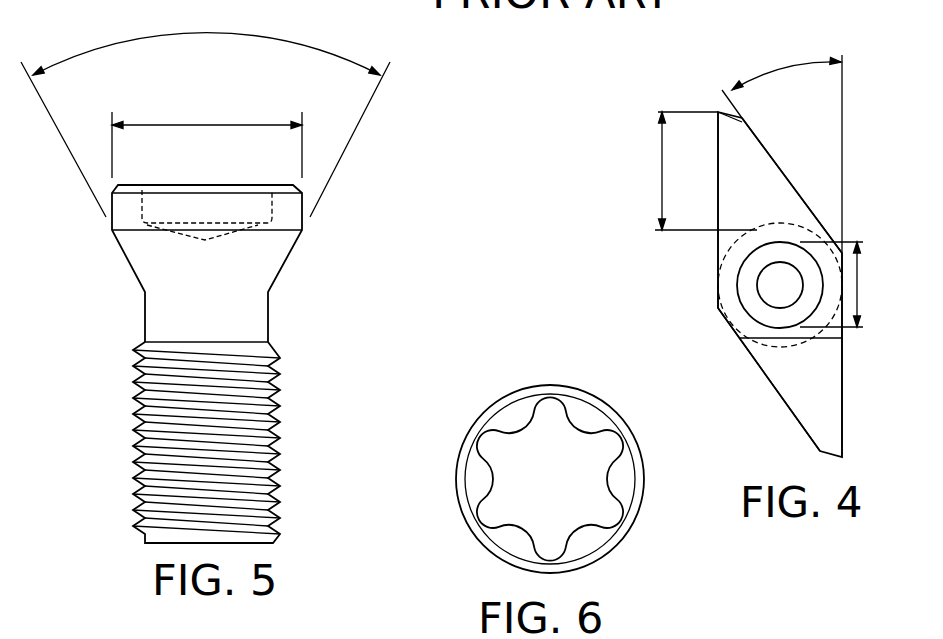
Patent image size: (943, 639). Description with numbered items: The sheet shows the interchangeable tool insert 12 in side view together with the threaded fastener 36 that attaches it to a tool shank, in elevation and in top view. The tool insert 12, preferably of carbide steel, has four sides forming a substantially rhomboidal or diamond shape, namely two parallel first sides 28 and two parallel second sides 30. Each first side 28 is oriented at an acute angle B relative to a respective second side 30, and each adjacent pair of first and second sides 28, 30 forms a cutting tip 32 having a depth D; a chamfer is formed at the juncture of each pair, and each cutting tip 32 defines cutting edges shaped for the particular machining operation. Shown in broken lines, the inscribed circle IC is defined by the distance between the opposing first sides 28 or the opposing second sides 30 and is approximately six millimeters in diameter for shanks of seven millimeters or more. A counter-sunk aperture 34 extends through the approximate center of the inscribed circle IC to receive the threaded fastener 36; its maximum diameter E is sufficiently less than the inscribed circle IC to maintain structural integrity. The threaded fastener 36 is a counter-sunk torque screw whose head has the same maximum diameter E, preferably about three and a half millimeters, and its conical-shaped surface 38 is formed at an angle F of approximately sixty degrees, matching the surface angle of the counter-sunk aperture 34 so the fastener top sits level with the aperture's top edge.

In FIG. 4, the interchangeable tool insert 12 is at (749, 284).
In FIG. 4, the first sides 28 is at (767, 151).
In FIG. 4, the second sides 30 is at (717, 158).
In FIG. 4, the cutting tip 32 is at (756, 192).
In FIG. 4, the counter-sunk aperture 34 is at (745, 282).
In FIG. 5, the threaded fastener 36 is at (244, 364).
In FIG. 6, the threaded fastener 36 is at (452, 514).
In FIG. 5, the conical-shaped surface 38 is at (128, 264).
In FIG. 4, the inscribed circle IC is at (720, 330).
In FIG. 4, the acute angle B is at (778, 77).
In FIG. 4, the depth D is at (661, 157).
In FIG. 5, the maximum diameter E is at (217, 124).
In FIG. 4, the maximum diameter E is at (859, 292).
In FIG. 5, the angle of the conical-shaped surface F is at (218, 36).